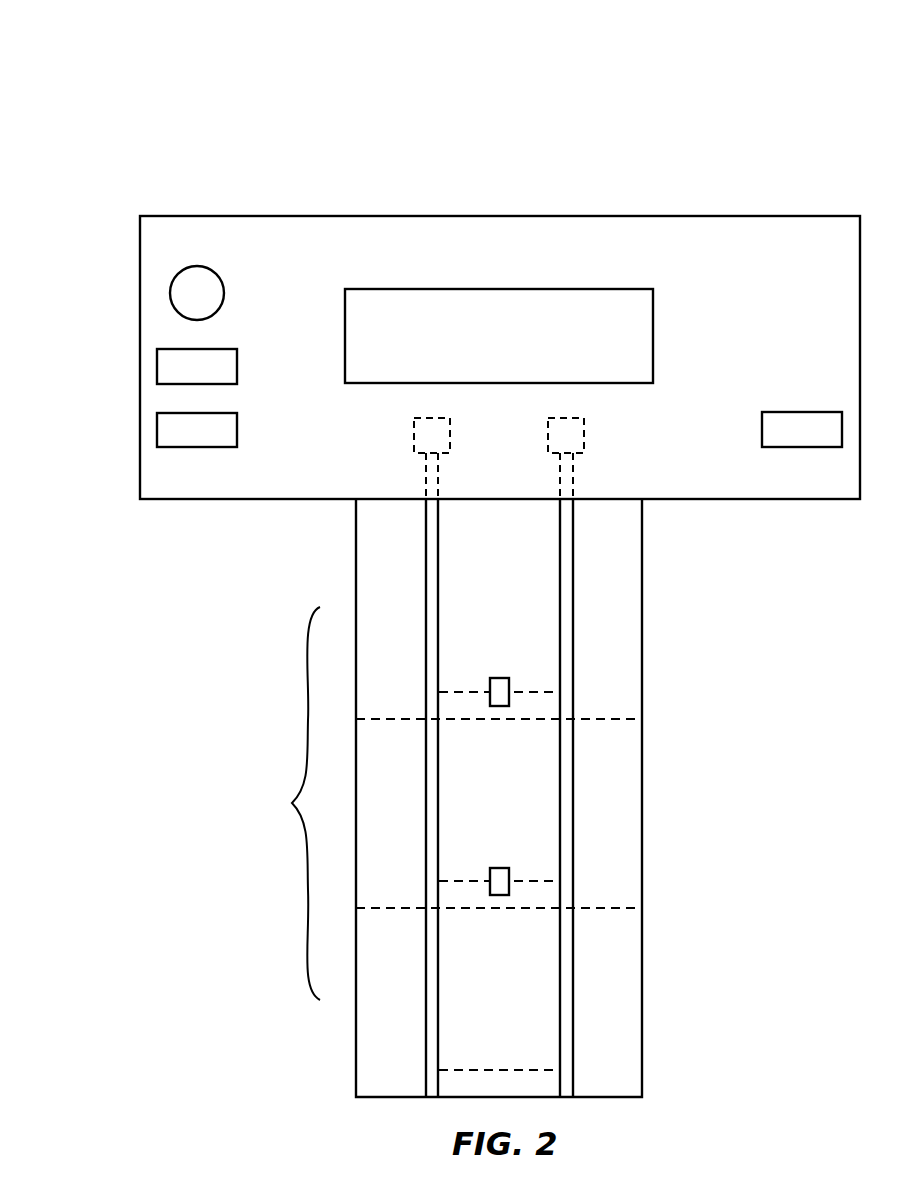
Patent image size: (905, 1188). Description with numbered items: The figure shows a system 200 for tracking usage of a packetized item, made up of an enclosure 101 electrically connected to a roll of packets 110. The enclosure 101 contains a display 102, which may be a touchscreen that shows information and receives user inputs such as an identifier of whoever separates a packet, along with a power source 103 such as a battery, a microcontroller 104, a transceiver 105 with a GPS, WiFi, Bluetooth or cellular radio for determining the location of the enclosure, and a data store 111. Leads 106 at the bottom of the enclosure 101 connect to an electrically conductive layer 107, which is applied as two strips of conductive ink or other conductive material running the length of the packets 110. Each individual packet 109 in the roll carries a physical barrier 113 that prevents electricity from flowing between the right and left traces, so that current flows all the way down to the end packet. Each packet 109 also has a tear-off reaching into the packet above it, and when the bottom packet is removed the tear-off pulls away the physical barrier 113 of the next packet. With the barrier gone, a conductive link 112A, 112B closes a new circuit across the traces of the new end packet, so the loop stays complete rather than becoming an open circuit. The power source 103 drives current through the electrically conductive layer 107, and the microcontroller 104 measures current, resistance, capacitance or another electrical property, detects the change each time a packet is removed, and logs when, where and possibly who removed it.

The system 200 is at (112, 96).
The enclosure 101 is at (712, 216).
The display 102 is at (653, 337).
The power source 103 is at (215, 269).
The microcontroller 104 is at (237, 365).
The transceiver 105 is at (237, 430).
The leads 106 is at (450, 437).
The electrically conductive layer 107 is at (567, 553).
The packet 109 is at (630, 665).
The packets 110 is at (450, 803).
The data store 111 is at (762, 427).
The conductive link 112A is at (457, 880).
The conductive link 112B is at (507, 1070).
The physical barrier 113 is at (500, 678).